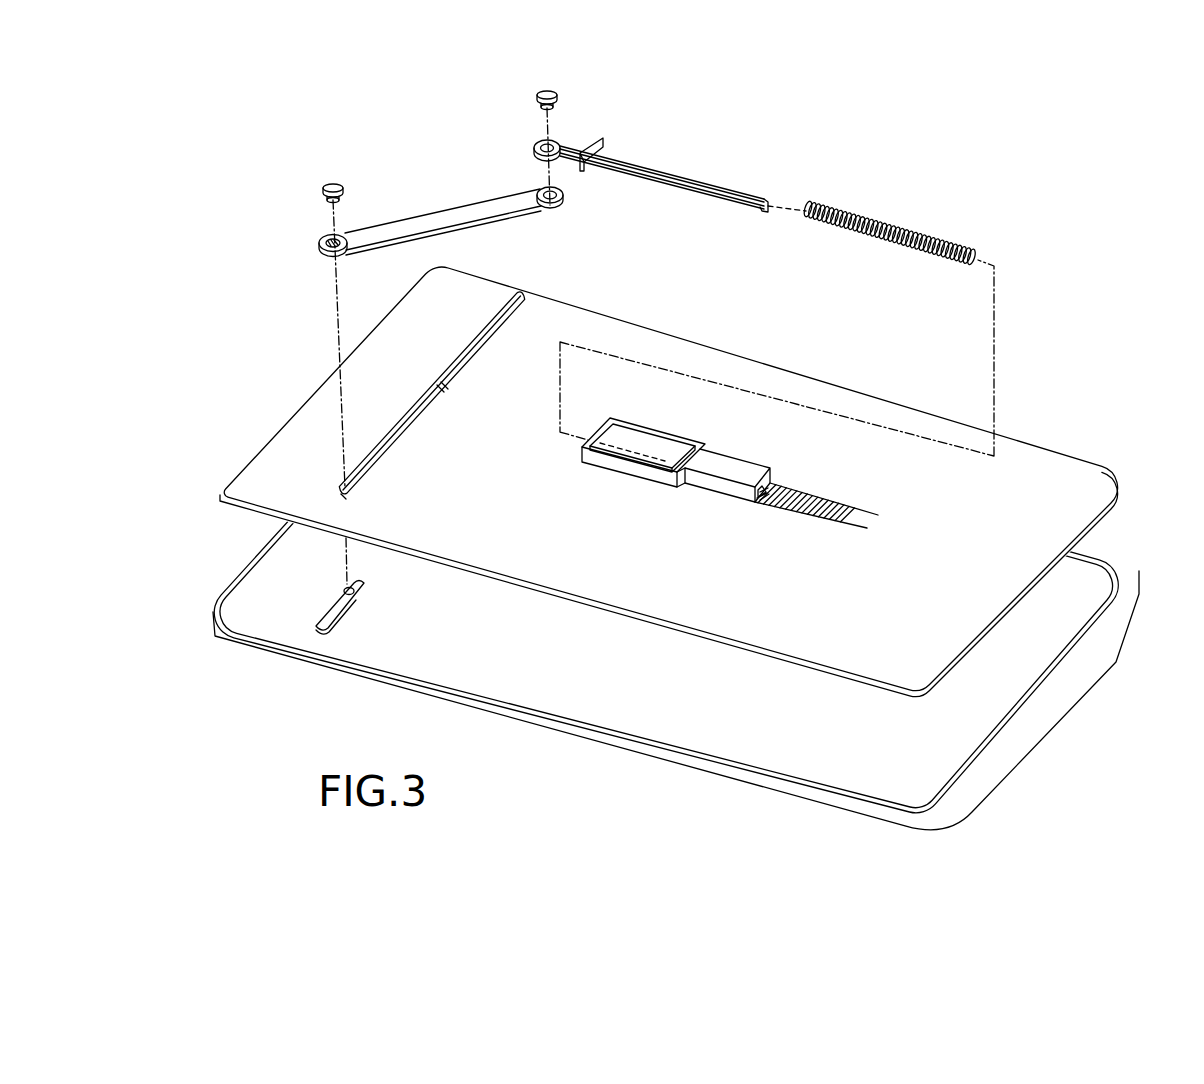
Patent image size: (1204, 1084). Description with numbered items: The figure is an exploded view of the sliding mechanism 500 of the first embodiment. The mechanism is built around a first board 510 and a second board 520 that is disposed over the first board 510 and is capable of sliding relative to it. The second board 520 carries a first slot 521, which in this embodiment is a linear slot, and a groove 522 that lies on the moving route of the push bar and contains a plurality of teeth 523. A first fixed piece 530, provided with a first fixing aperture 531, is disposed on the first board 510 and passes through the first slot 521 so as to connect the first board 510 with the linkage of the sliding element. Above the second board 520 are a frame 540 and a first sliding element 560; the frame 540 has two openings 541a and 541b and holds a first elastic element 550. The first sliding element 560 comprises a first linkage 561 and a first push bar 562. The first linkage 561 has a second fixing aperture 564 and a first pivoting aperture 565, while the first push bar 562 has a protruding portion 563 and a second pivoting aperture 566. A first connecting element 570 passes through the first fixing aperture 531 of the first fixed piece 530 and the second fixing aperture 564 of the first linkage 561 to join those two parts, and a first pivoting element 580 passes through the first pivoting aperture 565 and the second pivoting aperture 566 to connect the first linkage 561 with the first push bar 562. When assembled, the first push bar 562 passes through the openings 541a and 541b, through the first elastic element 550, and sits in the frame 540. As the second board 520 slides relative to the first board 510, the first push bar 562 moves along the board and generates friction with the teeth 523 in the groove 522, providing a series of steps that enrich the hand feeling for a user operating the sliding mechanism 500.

The sliding mechanism 500 is at (1086, 196).
The first board 510 is at (1100, 582).
The second board 520 is at (1060, 460).
The first slot 521 is at (514, 303).
The groove 522 is at (830, 507).
The teeth 523 is at (805, 490).
The first fixed piece 530 is at (352, 602).
The first fixing aperture 531 is at (345, 586).
The frame 540 is at (720, 450).
The opening 541a is at (640, 408).
The opening 541b is at (790, 500).
The first elastic element 550 is at (885, 226).
The first sliding element 560 is at (570, 230).
The first linkage 561 is at (448, 215).
The first push bar 562 is at (680, 175).
The protruding portion 563 is at (598, 160).
The second fixing aperture 564 is at (325, 240).
The first pivoting aperture 565 is at (545, 190).
The second pivoting aperture 566 is at (540, 140).
The first connecting element 570 is at (330, 184).
The first pivoting element 580 is at (550, 90).